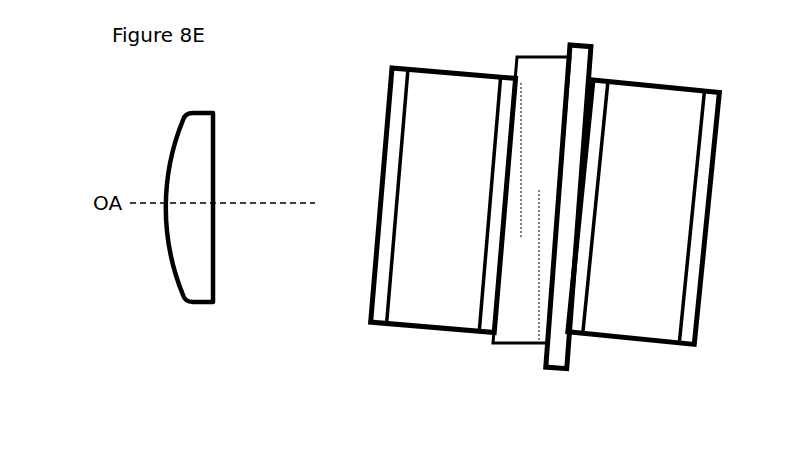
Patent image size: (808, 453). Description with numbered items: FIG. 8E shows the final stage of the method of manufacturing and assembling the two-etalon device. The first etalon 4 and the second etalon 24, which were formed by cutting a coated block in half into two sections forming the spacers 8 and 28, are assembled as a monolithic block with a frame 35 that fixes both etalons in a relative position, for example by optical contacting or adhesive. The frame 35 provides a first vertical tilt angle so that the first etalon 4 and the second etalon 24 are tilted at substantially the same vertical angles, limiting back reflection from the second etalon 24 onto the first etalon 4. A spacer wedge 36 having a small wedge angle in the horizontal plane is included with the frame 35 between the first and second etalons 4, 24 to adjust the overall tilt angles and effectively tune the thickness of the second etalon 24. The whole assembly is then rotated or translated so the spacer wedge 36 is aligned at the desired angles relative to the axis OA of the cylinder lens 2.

The cylinder lens 2 is at (201, 284).
The first etalon 4 is at (378, 87).
The spacer 8 is at (415, 298).
The second etalon 24 is at (683, 212).
The spacer 28 is at (668, 321).
The frame 35 is at (527, 72).
The spacer wedge 36 is at (595, 45).